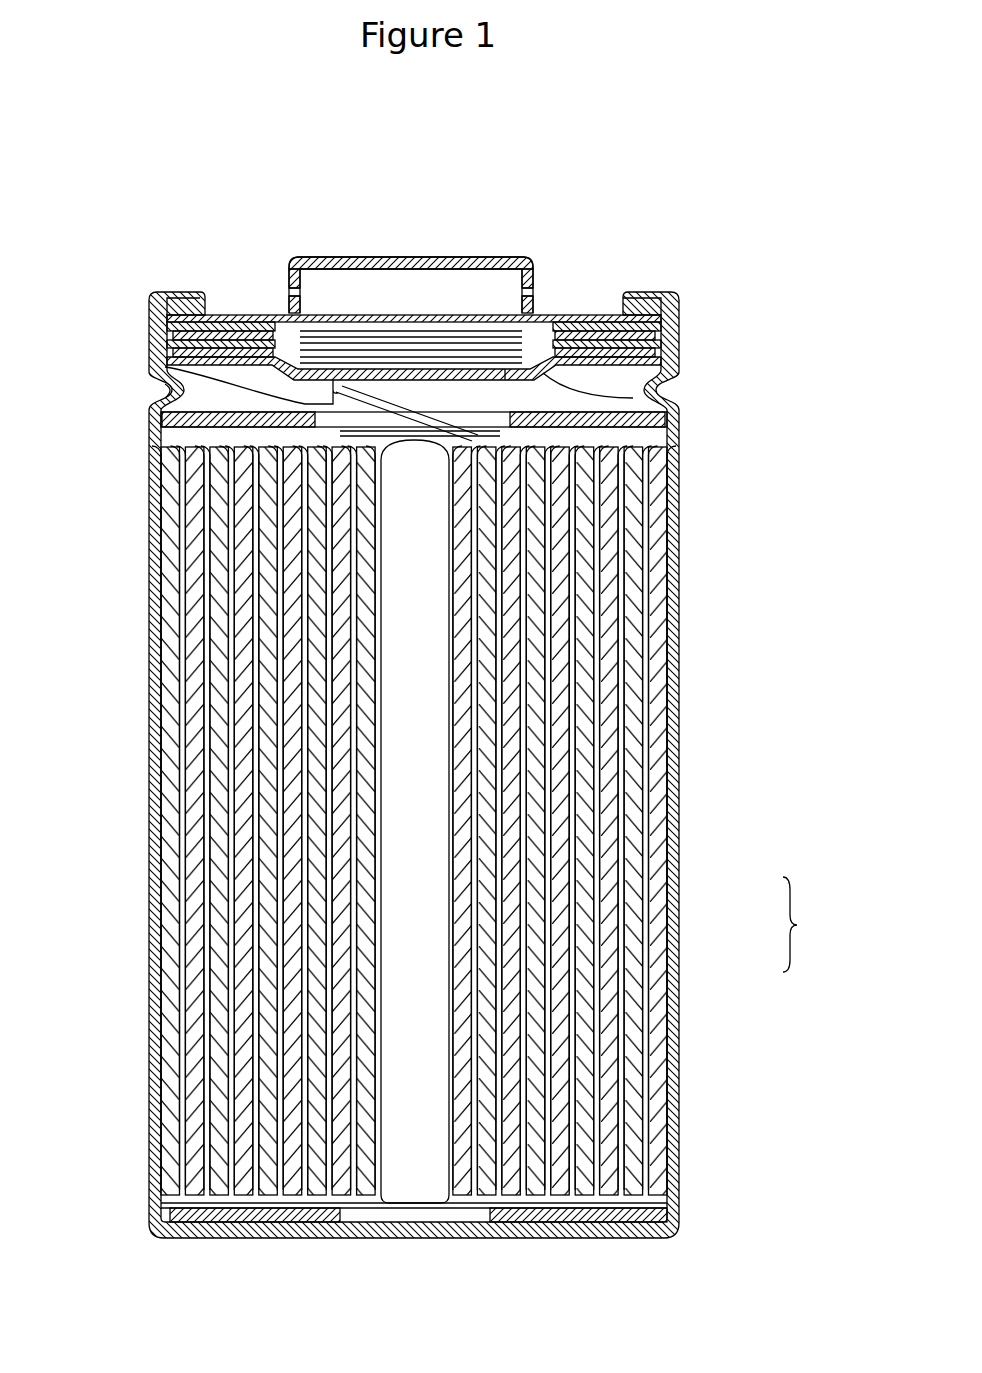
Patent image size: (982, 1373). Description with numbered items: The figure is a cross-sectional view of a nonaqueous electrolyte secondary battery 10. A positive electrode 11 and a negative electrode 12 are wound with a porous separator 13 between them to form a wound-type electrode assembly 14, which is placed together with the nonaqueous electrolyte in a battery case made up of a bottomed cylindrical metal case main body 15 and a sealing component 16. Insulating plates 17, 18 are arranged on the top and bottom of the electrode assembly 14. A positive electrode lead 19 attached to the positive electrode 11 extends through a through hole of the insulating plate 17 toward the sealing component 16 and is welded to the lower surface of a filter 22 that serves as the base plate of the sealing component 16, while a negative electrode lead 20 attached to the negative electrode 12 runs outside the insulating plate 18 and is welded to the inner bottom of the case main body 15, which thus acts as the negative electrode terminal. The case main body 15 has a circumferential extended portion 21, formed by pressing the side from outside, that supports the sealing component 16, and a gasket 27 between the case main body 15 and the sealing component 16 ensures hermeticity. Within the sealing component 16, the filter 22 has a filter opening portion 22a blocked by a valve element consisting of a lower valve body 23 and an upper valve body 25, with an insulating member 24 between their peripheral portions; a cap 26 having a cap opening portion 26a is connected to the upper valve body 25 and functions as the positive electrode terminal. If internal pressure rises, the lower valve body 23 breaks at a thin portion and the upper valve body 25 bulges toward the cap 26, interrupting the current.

The nonaqueous electrolyte secondary battery 10 is at (660, 134).
The positive electrode 11 is at (680, 890).
The negative electrode 12 is at (680, 925).
The separator 13 is at (680, 957).
The electrode assembly 14 is at (586, 817).
The case main body 15 is at (700, 283).
The sealing component 16 is at (529, 260).
The insulating plate 17 is at (683, 418).
The insulating plate 18 is at (685, 1222).
The positive electrode lead 19 is at (148, 371).
The negative electrode lead 20 is at (149, 1212).
The extended portion 21 is at (148, 398).
The filter 22 is at (413, 369).
The filter opening portion 22a is at (512, 333).
The lower valve body 23 is at (324, 331).
The insulating member 24 is at (237, 314).
The upper valve body 25 is at (337, 350).
The cap 26 is at (493, 257).
The cap opening portion 26a is at (534, 281).
The gasket 27 is at (679, 318).